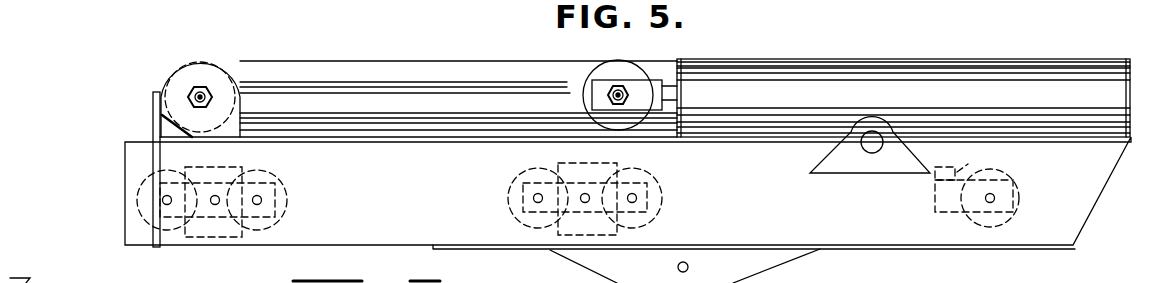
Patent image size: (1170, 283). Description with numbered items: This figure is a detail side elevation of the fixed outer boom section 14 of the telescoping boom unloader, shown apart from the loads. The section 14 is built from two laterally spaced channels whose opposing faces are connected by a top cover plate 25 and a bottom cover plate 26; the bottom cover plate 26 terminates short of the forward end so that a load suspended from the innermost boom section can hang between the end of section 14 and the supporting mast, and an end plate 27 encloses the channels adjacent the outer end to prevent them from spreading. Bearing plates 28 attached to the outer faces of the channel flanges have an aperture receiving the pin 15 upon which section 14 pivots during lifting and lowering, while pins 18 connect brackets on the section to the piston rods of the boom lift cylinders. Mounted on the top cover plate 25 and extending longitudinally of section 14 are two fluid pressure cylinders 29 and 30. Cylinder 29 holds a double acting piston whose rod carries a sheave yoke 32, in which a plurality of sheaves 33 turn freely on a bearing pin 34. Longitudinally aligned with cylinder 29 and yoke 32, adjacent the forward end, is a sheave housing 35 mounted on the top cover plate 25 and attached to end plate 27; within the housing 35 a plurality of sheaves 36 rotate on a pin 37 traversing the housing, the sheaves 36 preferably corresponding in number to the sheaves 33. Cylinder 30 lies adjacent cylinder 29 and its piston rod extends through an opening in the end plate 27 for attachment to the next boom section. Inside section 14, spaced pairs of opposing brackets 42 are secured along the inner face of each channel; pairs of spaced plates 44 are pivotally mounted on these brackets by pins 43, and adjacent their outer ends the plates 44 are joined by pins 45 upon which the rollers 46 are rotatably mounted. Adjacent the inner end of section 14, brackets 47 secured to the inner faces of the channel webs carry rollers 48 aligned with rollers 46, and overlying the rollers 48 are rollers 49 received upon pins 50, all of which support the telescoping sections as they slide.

The fixed boom section 14 is at (286, 258).
The pin 15 is at (872, 153).
The pins 18 is at (688, 267).
The top cover plate 25 is at (414, 61).
The bottom cover plate 26 is at (493, 250).
The end plate 27 is at (153, 102).
The bearing plates 28 is at (853, 165).
The fluid pressure cylinder 29 is at (903, 98).
The fluid pressure cylinder 30 is at (316, 97).
The sheave yoke 32 is at (636, 82).
The sheaves 33 is at (590, 95).
The bearing pin 34 is at (612, 90).
The sheave housing 35 is at (190, 60).
The sheaves 36 is at (178, 70).
The pin 37 is at (204, 88).
The brackets 42 is at (181, 240).
The pins 43 is at (215, 206).
The plates 44 is at (283, 185).
The pins 45 is at (285, 198).
The rollers 46 is at (137, 200).
The brackets 47 is at (935, 200).
The rollers 48 is at (1010, 218).
The rollers 49 is at (973, 158).
The pins 50 is at (943, 167).